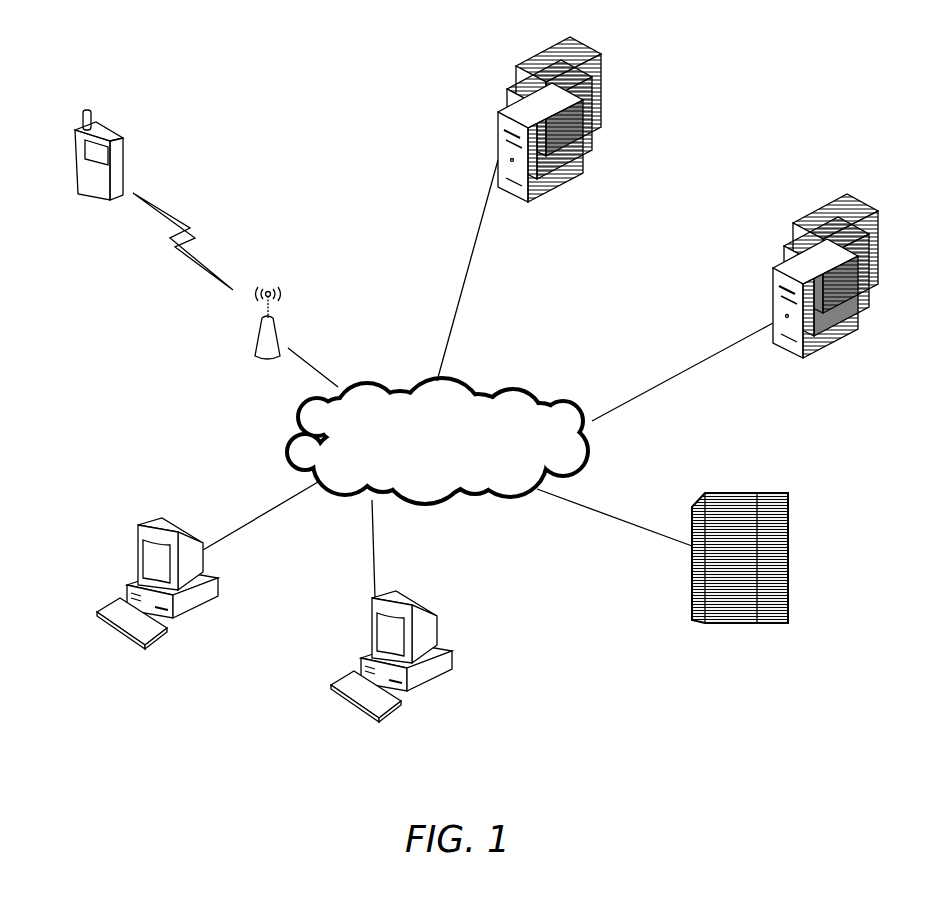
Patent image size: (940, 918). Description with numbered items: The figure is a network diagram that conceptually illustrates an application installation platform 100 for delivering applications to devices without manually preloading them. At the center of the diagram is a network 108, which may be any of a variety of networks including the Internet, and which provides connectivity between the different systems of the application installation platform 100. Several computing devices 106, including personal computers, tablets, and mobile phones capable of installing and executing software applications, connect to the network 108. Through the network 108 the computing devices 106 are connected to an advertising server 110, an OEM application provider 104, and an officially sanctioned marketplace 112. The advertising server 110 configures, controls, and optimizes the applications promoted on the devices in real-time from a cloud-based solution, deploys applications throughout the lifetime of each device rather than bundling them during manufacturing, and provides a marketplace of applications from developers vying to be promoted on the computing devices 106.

The application installation platform 100 is at (807, 692).
The OEM application provider 104 is at (773, 268).
The computing devices 106 is at (110, 133).
The network 108 is at (470, 496).
The advertising server 110 is at (498, 112).
The officially sanctioned marketplace 112 is at (790, 517).